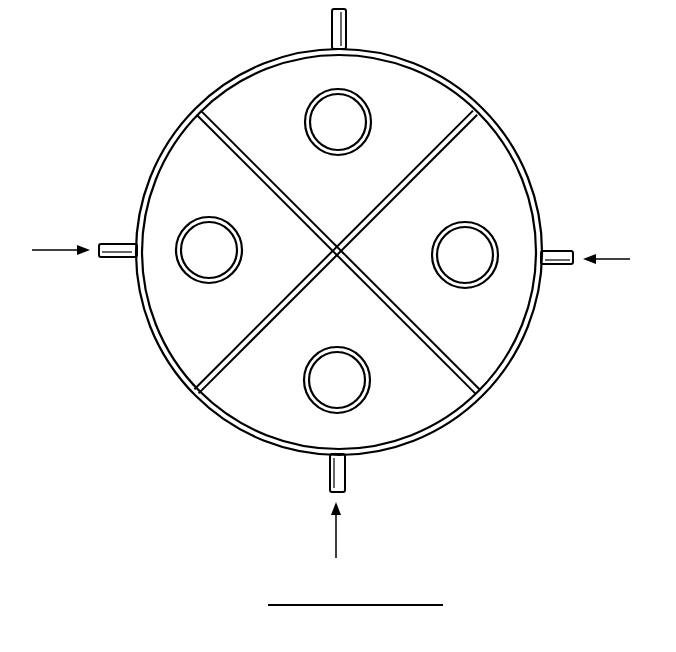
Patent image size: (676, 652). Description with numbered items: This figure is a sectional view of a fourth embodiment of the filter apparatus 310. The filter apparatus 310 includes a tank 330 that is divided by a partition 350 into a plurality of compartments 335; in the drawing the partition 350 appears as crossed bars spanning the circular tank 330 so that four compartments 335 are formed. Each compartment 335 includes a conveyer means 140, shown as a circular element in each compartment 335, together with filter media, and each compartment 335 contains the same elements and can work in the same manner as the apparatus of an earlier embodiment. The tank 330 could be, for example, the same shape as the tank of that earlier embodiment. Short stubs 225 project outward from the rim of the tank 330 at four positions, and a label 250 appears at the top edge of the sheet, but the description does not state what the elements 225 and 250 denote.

The filter apparatus 310 is at (141, 138).
The tank 330 is at (516, 153).
The compartments 335 is at (402, 83).
The partition 350 is at (208, 119).
The conveyer means 140 is at (372, 128).
The inlet/outlet stubs 225 is at (332, 29).
The upper element (cut off) 250 is at (556, 4).